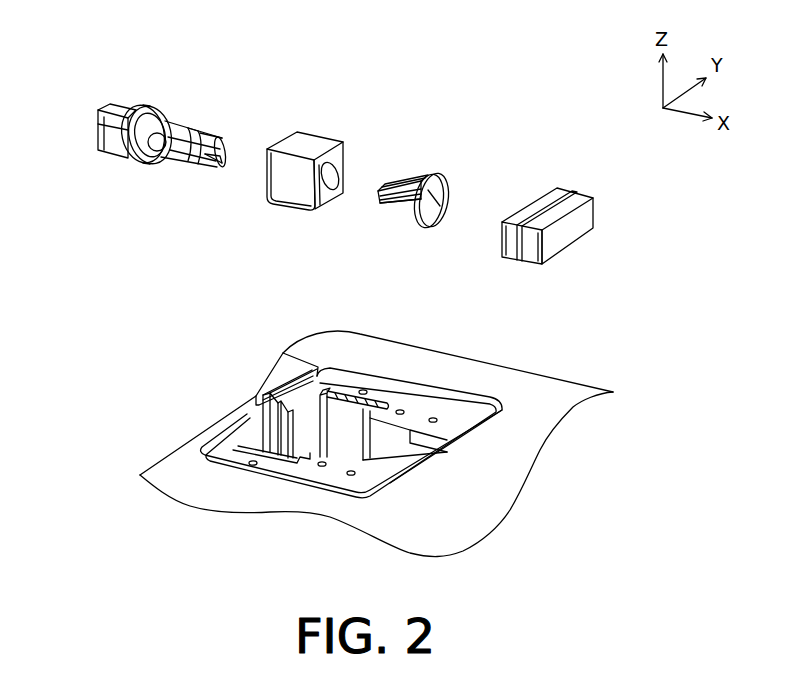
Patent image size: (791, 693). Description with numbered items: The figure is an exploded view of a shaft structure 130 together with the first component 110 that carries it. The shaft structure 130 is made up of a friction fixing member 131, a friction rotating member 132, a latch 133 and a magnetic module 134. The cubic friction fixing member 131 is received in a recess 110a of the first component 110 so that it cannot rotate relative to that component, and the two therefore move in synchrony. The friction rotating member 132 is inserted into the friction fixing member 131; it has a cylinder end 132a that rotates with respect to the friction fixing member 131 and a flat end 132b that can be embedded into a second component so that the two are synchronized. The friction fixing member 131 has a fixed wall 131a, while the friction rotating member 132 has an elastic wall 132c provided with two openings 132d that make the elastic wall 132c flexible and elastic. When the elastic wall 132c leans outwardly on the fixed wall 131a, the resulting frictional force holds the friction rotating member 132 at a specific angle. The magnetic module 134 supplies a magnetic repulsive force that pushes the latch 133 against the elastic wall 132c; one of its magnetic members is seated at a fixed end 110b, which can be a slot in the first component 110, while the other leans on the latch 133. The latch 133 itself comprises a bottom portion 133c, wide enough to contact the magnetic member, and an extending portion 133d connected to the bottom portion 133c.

The first component 110 is at (543, 387).
The recess 110a is at (304, 446).
The fixed end 110b is at (430, 470).
The shaft structure 130 is at (436, 80).
The friction fixing member 131 is at (311, 140).
The fixed wall 131a is at (340, 158).
The friction rotating member 132 is at (119, 112).
The cylinder end 132a is at (220, 128).
The flat end 132b is at (112, 133).
The elastic wall 132c is at (196, 138).
The opening 132d is at (224, 148).
The latch 133 is at (437, 189).
The bottom portion 133c is at (434, 222).
The extending portion 133d is at (386, 206).
The magnetic module 134 is at (583, 218).